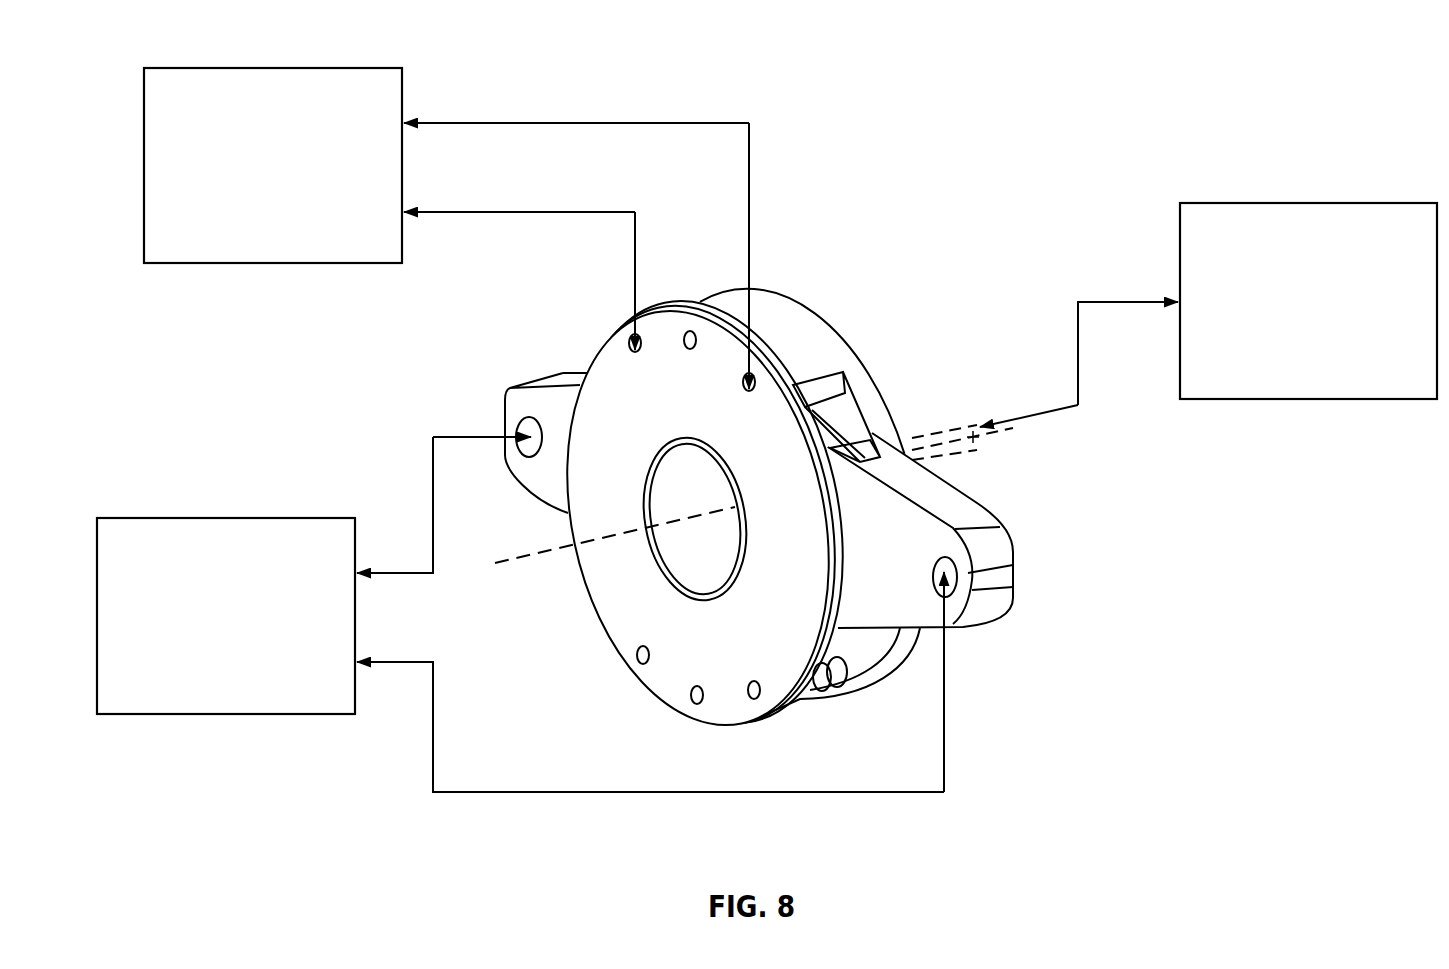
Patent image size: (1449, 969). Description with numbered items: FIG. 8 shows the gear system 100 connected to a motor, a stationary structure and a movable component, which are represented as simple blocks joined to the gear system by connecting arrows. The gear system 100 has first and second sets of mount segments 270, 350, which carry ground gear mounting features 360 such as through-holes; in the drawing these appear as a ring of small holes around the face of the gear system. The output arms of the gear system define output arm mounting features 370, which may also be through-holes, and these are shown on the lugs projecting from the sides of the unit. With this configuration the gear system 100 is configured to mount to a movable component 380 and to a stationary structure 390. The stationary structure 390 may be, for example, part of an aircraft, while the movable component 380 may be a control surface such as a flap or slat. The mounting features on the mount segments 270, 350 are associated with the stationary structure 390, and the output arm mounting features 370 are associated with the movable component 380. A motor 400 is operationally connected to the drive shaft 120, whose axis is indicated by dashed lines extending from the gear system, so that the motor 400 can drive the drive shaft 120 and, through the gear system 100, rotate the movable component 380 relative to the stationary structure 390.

The gear system 100 is at (607, 353).
The drive shaft 120 is at (952, 430).
The first set of mount segments 270 is at (765, 298).
The second set of mount segments 350 is at (698, 308).
The ground gear mounting features 360 is at (698, 702).
The output arm mounting features 370 is at (957, 608).
The movable component 380 is at (168, 518).
The stationary structure 390 is at (218, 68).
The motor 400 is at (1365, 203).